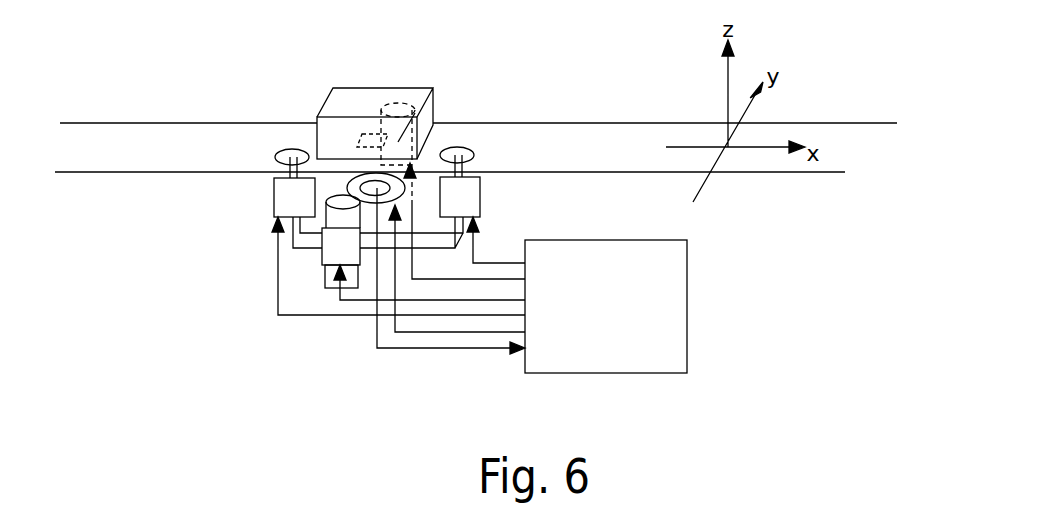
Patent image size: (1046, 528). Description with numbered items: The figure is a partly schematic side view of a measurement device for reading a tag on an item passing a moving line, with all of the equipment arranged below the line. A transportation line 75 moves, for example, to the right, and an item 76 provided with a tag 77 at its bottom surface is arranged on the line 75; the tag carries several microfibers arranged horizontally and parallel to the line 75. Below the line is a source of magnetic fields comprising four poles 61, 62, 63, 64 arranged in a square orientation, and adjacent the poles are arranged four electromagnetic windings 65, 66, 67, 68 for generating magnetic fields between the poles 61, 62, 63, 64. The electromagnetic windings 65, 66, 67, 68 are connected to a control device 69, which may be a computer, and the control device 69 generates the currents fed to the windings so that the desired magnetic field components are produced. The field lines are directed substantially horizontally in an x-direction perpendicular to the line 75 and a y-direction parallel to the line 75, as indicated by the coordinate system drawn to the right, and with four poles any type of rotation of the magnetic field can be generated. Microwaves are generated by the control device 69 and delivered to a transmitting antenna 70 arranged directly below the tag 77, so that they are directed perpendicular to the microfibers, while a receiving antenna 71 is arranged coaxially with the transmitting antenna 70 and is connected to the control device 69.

The pole 61 is at (400, 107).
The pole 62 is at (478, 155).
The pole 63 is at (322, 226).
The pole 64 is at (275, 157).
The electromagnetic winding 65 is at (415, 113).
The electromagnetic winding 66 is at (480, 187).
The electromagnetic winding 67 is at (337, 243).
The electromagnetic winding 68 is at (290, 189).
The control device 69 is at (532, 268).
The transmitting antenna 70 is at (366, 179).
The receiving antenna 71 is at (352, 183).
The transportation line 75 is at (587, 123).
The item 76 is at (377, 88).
The tag 77 is at (367, 137).